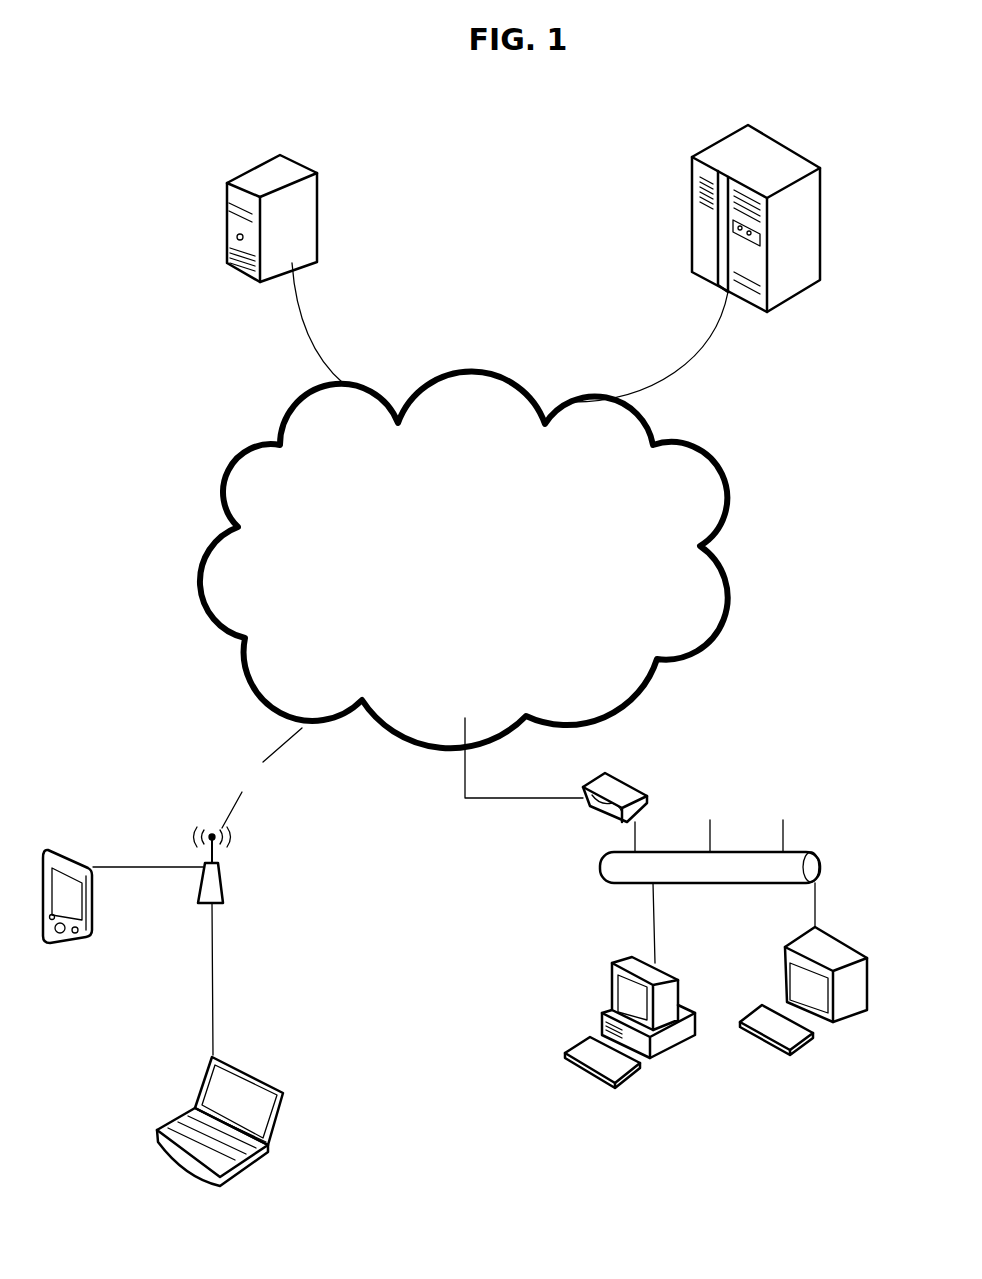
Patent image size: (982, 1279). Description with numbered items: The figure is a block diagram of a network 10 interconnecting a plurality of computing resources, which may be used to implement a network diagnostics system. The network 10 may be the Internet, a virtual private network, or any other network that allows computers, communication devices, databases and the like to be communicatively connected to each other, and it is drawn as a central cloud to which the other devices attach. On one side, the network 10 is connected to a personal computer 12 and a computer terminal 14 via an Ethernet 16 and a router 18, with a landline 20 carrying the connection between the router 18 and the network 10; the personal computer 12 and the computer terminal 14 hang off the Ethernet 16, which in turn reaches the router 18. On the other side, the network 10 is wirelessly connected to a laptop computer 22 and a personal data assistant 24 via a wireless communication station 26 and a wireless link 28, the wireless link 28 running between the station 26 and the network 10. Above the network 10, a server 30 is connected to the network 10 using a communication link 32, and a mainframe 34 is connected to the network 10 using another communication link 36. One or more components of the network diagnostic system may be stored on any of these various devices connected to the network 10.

The network 10 is at (464, 560).
The personal computer 12 is at (612, 963).
The computer terminal 14 is at (848, 948).
The Ethernet 16 is at (710, 867).
The router 18 is at (650, 798).
The landline 20 is at (512, 798).
The laptop computer 22 is at (265, 1152).
The personal data assistant 24 is at (75, 860).
The wireless communication station 26 is at (223, 885).
The wireless link 28 is at (262, 778).
The server 30 is at (317, 210).
The communication link 32 is at (329, 323).
The mainframe 34 is at (820, 280).
The communication link 36 is at (650, 347).